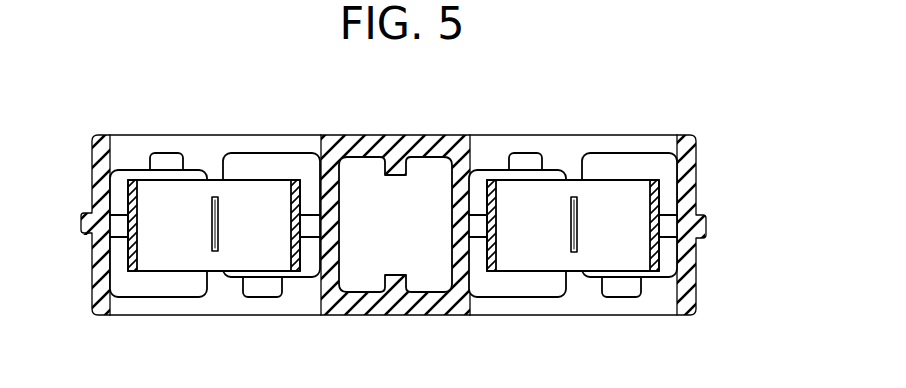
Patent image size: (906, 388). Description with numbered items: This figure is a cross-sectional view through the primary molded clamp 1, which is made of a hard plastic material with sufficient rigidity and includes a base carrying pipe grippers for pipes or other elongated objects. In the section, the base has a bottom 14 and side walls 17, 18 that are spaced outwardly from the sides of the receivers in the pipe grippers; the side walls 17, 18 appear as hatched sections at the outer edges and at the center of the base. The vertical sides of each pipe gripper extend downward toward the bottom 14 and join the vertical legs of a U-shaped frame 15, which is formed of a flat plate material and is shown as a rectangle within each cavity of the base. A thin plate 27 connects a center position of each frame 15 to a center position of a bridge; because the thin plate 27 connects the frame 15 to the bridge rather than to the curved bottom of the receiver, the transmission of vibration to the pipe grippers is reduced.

The primary molded clamp 1 is at (742, 156).
The bottom 14 is at (233, 303).
The U-shaped frame 15 is at (183, 192).
The side wall 17 is at (97, 279).
The side wall 18 is at (335, 222).
The thin plate 27 is at (212, 235).